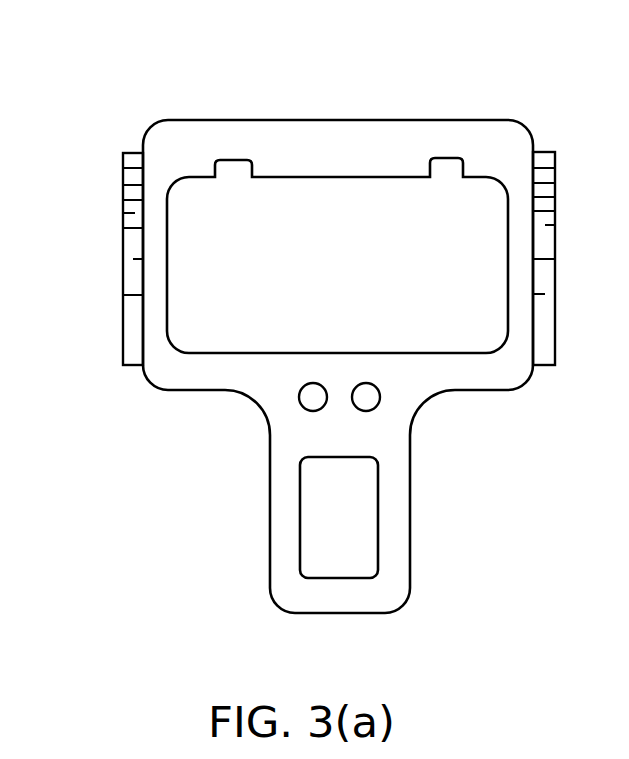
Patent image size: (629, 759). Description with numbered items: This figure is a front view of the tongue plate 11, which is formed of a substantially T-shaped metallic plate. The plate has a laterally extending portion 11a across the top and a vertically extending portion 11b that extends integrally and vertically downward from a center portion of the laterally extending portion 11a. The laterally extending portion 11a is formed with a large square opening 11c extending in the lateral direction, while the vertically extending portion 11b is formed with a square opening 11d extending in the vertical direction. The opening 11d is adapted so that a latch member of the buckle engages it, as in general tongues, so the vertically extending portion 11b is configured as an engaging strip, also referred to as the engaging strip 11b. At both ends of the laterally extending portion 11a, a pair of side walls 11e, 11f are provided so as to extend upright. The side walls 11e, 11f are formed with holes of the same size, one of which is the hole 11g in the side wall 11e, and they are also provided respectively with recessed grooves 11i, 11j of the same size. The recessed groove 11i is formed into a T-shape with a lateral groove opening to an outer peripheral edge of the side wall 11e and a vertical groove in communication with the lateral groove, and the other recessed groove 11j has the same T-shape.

The tongue plate 11 is at (329, 324).
The laterally extending portion 11a is at (386, 138).
The vertically extending portion 11b is at (398, 545).
The large square opening 11c is at (360, 317).
The square opening 11d is at (360, 559).
The side wall 11e is at (543, 297).
The side wall 11f is at (126, 258).
The hole 11g is at (581, 220).
The recessed groove 11i is at (541, 192).
The recessed groove 11j is at (126, 200).